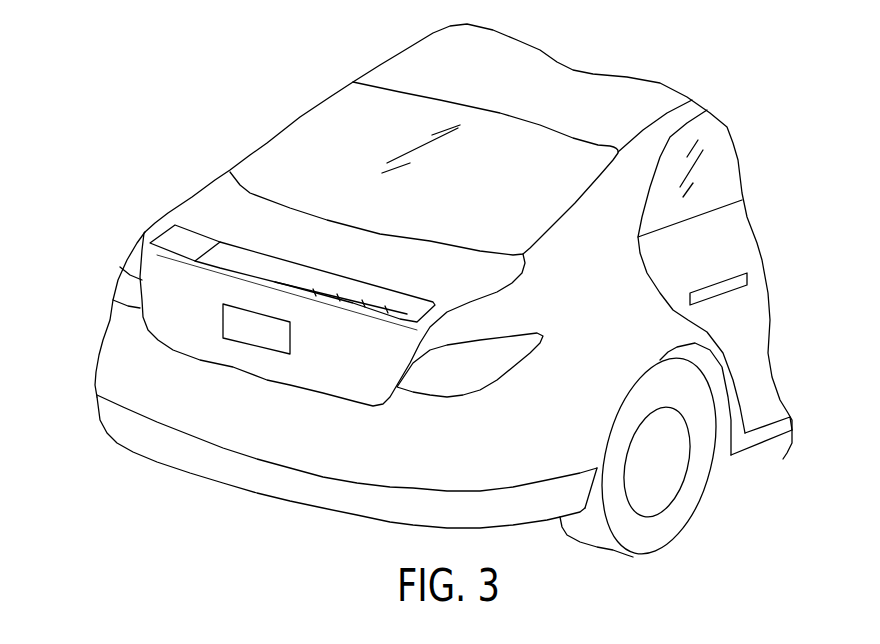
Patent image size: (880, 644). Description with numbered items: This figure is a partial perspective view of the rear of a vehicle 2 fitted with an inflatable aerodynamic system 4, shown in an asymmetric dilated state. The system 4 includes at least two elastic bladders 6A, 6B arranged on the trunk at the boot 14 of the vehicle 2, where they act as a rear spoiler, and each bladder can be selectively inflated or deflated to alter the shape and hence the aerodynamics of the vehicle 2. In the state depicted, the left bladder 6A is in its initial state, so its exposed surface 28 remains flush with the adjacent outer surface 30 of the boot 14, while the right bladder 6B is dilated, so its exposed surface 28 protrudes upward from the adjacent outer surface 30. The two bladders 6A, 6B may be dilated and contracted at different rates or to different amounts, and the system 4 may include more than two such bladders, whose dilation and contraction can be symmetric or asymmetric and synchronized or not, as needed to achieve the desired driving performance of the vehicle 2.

The vehicle 2 is at (99, 210).
The inflatable aerodynamic system 4 is at (101, 237).
The left bladder 6A is at (190, 240).
The right bladder 6B is at (273, 267).
The boot 14 is at (63, 374).
The exposed surface 28 is at (382, 297).
The adjacent outer surface 30 is at (431, 255).